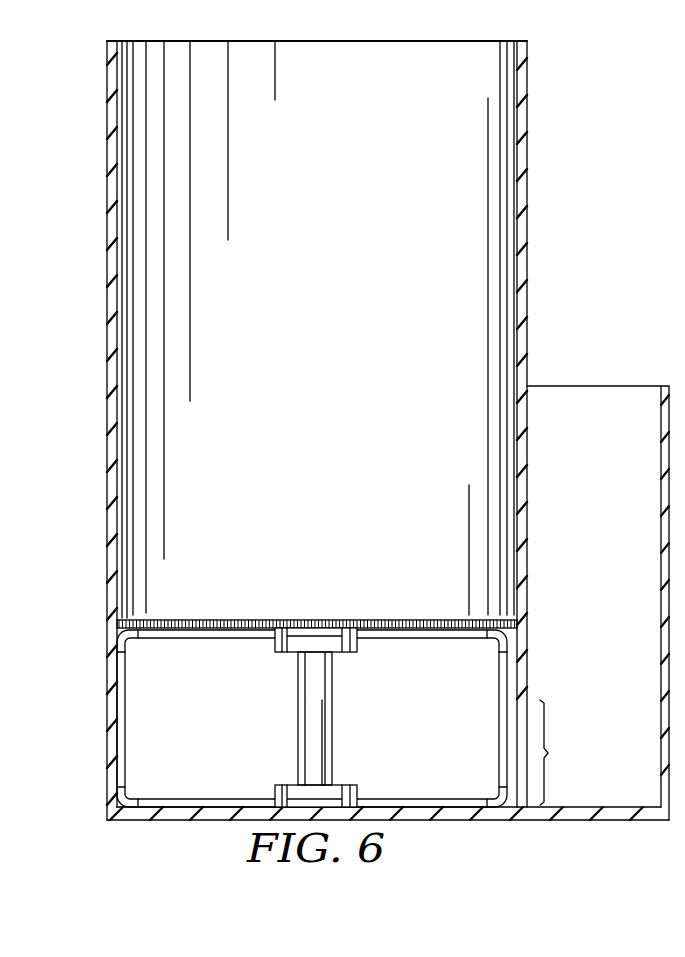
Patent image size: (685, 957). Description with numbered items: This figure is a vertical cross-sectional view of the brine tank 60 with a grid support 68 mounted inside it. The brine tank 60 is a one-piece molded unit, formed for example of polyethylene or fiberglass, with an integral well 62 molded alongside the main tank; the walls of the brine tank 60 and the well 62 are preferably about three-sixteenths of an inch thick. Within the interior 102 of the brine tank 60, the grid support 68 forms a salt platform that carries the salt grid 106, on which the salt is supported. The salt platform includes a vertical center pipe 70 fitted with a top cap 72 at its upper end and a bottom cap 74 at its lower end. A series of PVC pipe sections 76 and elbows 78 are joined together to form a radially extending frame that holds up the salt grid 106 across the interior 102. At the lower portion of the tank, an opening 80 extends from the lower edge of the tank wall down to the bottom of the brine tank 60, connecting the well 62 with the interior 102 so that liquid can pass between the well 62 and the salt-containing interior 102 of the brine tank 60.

The brine tank 60 is at (540, 237).
The well 62 is at (593, 358).
The grid support 68 is at (312, 717).
The vertical center pipe 70 is at (333, 735).
The top cap 72 is at (281, 655).
The bottom cap 74 is at (285, 784).
The PVC pipe section 76 is at (124, 798).
The elbow 78 is at (128, 644).
The opening 80 is at (559, 752).
The interior 102 is at (230, 726).
The salt grid 106 is at (190, 618).